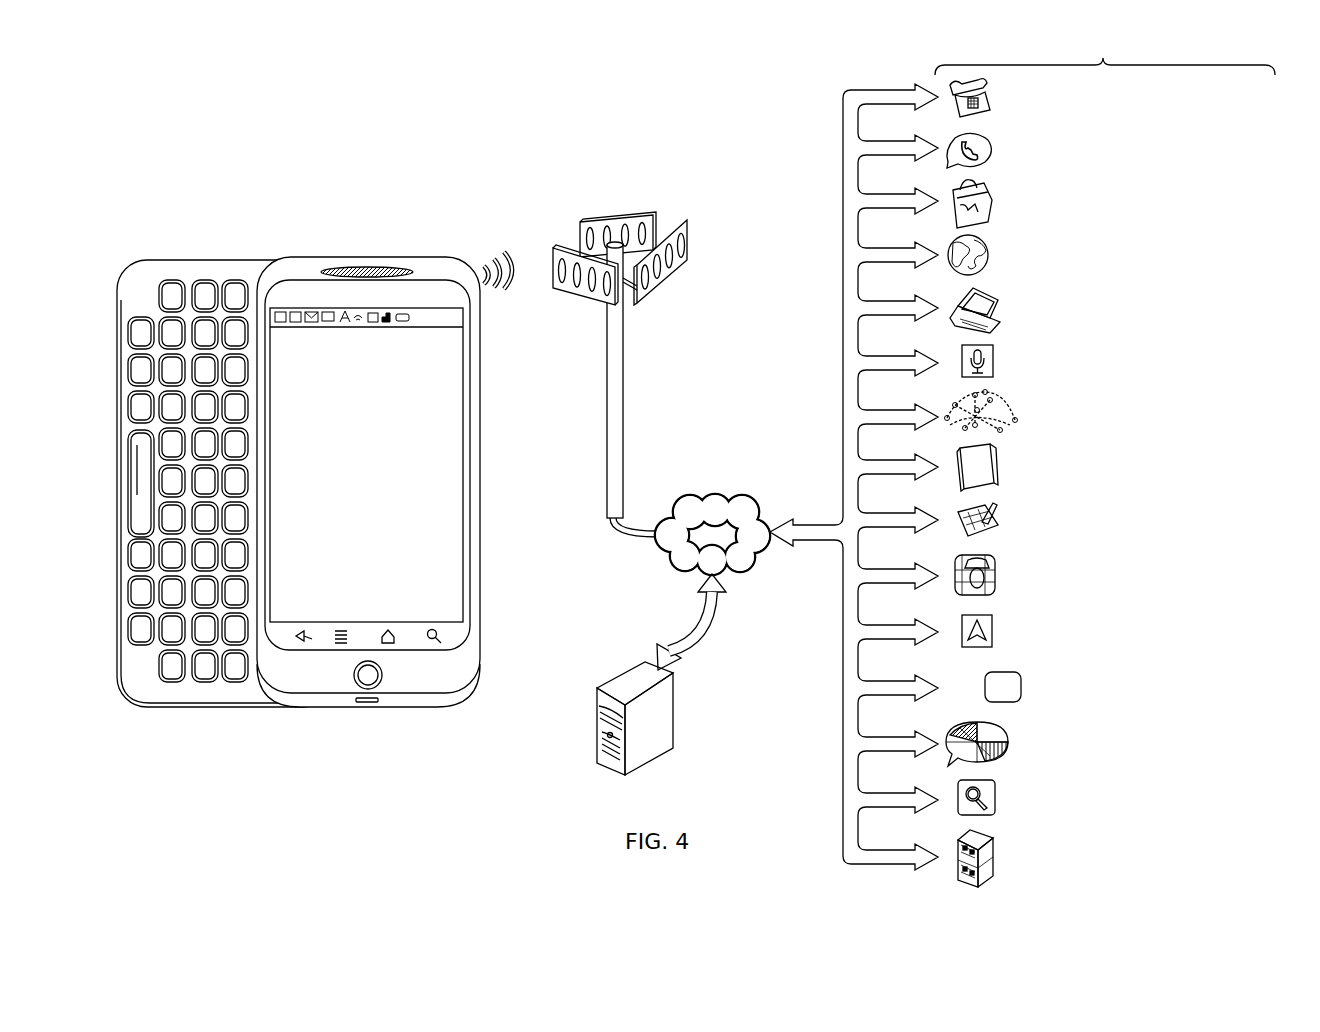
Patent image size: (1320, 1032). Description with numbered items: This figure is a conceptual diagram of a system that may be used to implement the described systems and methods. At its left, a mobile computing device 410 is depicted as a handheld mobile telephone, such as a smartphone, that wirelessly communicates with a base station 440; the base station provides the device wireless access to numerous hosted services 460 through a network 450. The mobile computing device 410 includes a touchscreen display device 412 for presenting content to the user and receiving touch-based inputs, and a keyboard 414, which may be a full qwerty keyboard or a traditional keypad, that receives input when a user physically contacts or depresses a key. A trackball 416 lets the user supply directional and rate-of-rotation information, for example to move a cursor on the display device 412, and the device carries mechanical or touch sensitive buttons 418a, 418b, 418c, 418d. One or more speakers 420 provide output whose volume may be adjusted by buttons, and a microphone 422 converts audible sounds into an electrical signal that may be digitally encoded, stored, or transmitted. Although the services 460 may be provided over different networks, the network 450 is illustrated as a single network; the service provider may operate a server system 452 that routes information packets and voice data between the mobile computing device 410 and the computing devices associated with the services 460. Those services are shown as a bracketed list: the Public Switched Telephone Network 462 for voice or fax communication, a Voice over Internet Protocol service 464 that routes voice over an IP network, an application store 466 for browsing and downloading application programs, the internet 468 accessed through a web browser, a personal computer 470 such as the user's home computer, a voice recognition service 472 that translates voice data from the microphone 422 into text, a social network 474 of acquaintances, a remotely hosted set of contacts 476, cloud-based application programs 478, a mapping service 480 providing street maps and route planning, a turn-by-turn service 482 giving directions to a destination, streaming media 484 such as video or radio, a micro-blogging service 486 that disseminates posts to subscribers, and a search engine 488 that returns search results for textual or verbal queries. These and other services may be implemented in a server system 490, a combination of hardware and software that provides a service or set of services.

The mobile computing device 410 is at (420, 204).
The touchscreen display device 412 is at (472, 478).
The keyboard 414 is at (225, 262).
The trackball 416 is at (383, 677).
The button 418a is at (303, 632).
The button 418b is at (342, 630).
The button 418c is at (388, 630).
The button 418d is at (434, 630).
The speaker 420 is at (373, 268).
The microphone 422 is at (366, 703).
The base station 440 is at (665, 193).
The network 450 is at (716, 495).
The server system 452 is at (676, 718).
The services 460 is at (1023, 464).
The Public Switched Telephone Network (PSTN) 462 is at (993, 100).
The Voice over Internet Protocol (VoIP) service 464 is at (993, 140).
The application store 466 is at (994, 196).
The internet 468 is at (993, 254).
The personal computer 470 is at (996, 304).
The voice recognition service 472 is at (994, 356).
The social network 474 is at (1010, 400).
The contacts 476 is at (995, 463).
The cloud-based application programs 478 is at (994, 518).
The mapping service 480 is at (995, 566).
The turn-by-turn service 482 is at (994, 625).
The streaming media 484 is at (1021, 682).
The micro-blogging service 486 is at (1010, 736).
The search engine 488 is at (996, 793).
The server system 490 is at (995, 848).